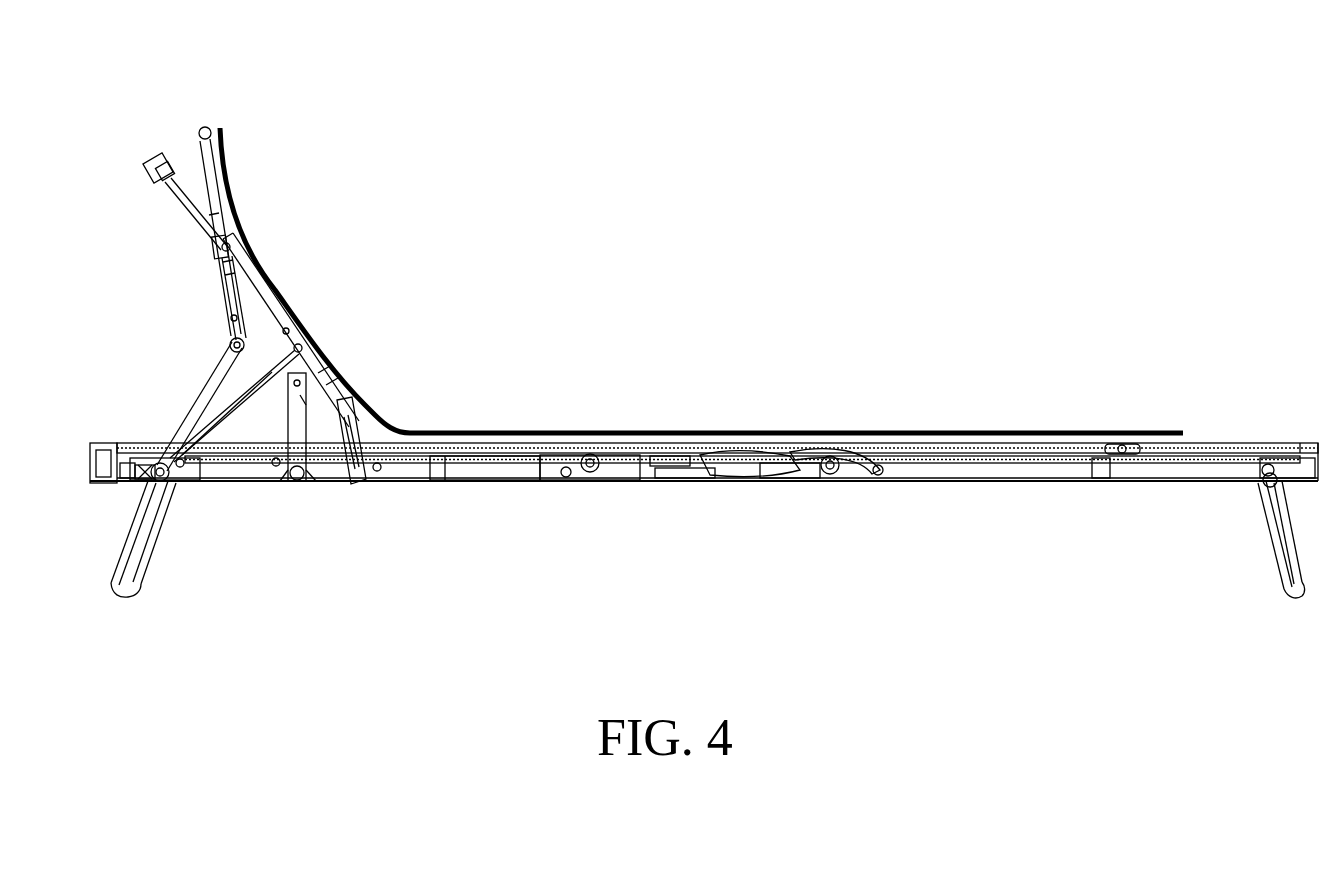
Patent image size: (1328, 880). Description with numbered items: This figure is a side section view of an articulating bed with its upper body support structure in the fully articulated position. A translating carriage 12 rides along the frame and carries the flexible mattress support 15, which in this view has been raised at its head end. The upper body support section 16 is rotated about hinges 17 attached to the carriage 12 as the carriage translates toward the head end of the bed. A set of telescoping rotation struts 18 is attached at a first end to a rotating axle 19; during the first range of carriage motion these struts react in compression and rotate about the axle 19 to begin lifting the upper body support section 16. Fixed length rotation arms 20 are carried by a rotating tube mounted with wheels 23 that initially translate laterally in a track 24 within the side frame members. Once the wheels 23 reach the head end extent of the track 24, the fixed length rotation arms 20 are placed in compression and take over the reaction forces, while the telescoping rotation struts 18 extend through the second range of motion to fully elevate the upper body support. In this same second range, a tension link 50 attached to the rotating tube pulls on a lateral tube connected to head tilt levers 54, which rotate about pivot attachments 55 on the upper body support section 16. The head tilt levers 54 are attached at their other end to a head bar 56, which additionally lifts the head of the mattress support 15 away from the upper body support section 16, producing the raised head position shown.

The translating carriage 12 is at (543, 464).
The flexible mattress support 15 is at (415, 425).
The upper body support section 16 is at (343, 366).
The hinges 17 is at (363, 482).
The telescoping rotation struts 18 is at (328, 484).
The rotating axle 19 is at (298, 484).
The fixed length rotation arms 20 is at (243, 387).
The wheels 23 is at (172, 483).
The track 24 is at (148, 455).
The tension link 50 is at (218, 378).
The head tilt levers 54 is at (227, 293).
The pivot attachments 55 is at (230, 247).
The head bar 56 is at (205, 128).